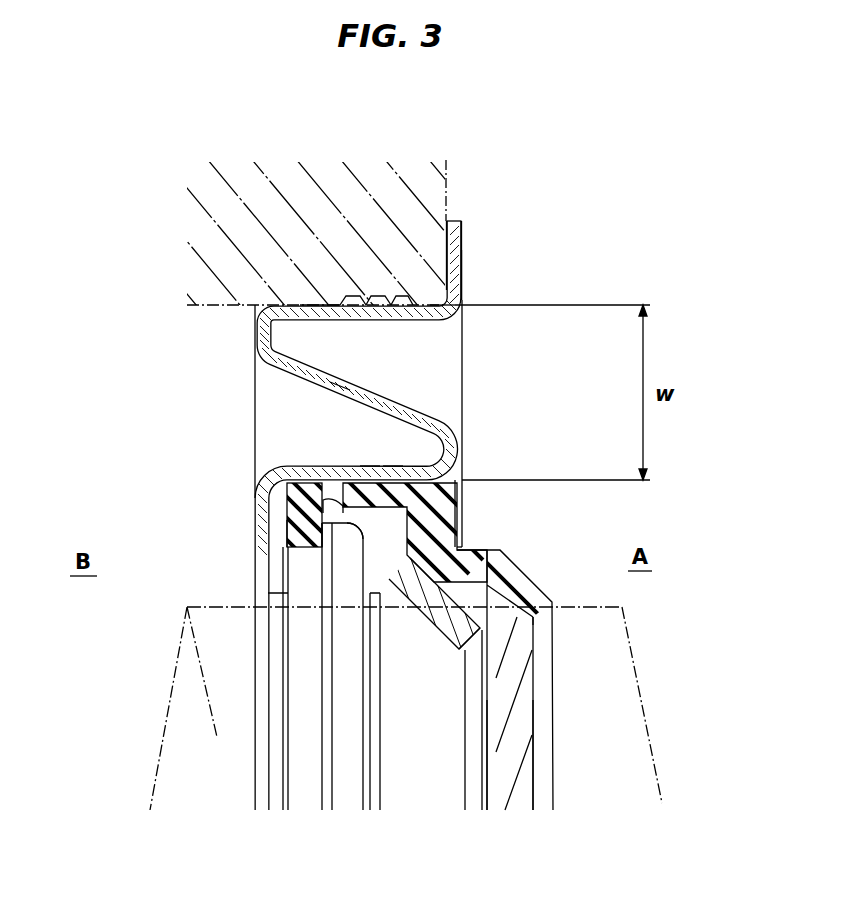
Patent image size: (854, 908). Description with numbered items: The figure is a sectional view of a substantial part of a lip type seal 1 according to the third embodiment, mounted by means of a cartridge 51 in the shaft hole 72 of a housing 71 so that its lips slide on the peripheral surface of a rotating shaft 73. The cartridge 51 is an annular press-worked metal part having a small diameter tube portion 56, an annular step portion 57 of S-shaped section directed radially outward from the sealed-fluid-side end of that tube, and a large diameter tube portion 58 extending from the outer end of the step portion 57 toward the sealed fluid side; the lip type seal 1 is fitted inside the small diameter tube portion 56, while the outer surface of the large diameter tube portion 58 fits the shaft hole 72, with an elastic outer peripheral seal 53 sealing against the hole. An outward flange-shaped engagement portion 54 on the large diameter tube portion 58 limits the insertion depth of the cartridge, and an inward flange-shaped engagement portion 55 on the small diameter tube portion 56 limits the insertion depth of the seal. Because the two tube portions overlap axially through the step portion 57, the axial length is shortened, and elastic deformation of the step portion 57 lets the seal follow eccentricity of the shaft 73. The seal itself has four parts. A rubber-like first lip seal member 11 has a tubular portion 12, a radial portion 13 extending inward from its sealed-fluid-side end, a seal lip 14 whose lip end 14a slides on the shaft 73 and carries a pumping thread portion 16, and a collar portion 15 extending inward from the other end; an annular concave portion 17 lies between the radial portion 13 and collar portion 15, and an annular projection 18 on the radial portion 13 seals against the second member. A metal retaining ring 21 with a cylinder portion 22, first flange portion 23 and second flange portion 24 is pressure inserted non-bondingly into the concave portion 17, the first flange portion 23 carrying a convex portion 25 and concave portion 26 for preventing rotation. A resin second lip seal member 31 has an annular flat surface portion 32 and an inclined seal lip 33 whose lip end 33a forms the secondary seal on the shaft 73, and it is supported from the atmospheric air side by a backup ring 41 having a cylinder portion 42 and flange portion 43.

The lip type seal 1 is at (343, 477).
The first lip seal member 11 is at (413, 472).
The tubular portion 12 is at (300, 488).
The radial portion 13 is at (440, 478).
The seal lip 14 is at (513, 570).
The lip end 14a is at (535, 620).
The collar portion 15 is at (318, 503).
The thread portion 16 is at (512, 790).
The annular concave portion 17 is at (317, 490).
The annular projection 18 is at (373, 593).
The retaining ring 21 is at (287, 490).
The cylinder portion 22 is at (370, 472).
The first flange portion 23 is at (462, 477).
The second flange portion 24 is at (290, 488).
The convex portion 25 is at (363, 547).
The concave portion 26 is at (457, 547).
The second lip seal member 31 is at (408, 617).
The annular flat surface portion 32 is at (393, 472).
The seal lip 33 is at (440, 628).
The lip end 33a is at (470, 645).
The backup ring 41 is at (360, 567).
The cylinder portion 42 is at (270, 477).
The flange portion 43 is at (388, 600).
The cartridge 51 is at (466, 278).
The outer peripheral seal 53 is at (368, 300).
The outward flange-shaped engagement portion 54 is at (462, 250).
The inward flange-shaped engagement portion 55 is at (300, 533).
The small diameter tube portion 56 is at (343, 387).
The annular step portion 57 is at (450, 312).
The large diameter tube portion 58 is at (318, 306).
The housing 71 is at (446, 185).
The shaft hole 72 is at (195, 300).
The shaft 73 is at (595, 787).